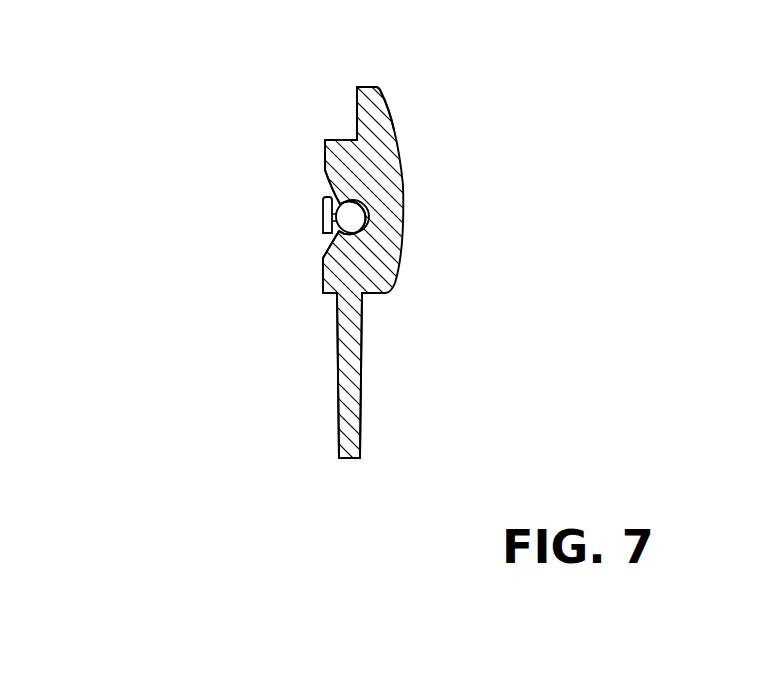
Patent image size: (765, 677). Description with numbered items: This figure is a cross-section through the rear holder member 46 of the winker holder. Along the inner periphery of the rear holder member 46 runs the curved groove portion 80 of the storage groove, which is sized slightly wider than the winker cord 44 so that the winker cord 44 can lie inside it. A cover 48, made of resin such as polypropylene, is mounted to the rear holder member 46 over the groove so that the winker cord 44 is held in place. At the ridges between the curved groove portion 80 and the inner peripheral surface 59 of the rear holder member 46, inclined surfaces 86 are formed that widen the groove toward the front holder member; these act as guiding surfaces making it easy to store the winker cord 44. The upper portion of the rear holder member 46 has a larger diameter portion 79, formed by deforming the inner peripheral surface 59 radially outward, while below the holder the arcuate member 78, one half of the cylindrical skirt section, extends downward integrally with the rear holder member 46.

The rear holder member 46 is at (408, 126).
The larger diameter portion 79 is at (357, 112).
The inner peripheral surface 59 is at (323, 147).
The inclined surface 86 is at (318, 180).
The winker cord 44 is at (322, 219).
The cover 48 is at (322, 195).
The curved groove portion 80 is at (322, 232).
The arcuate member 78 is at (360, 405).